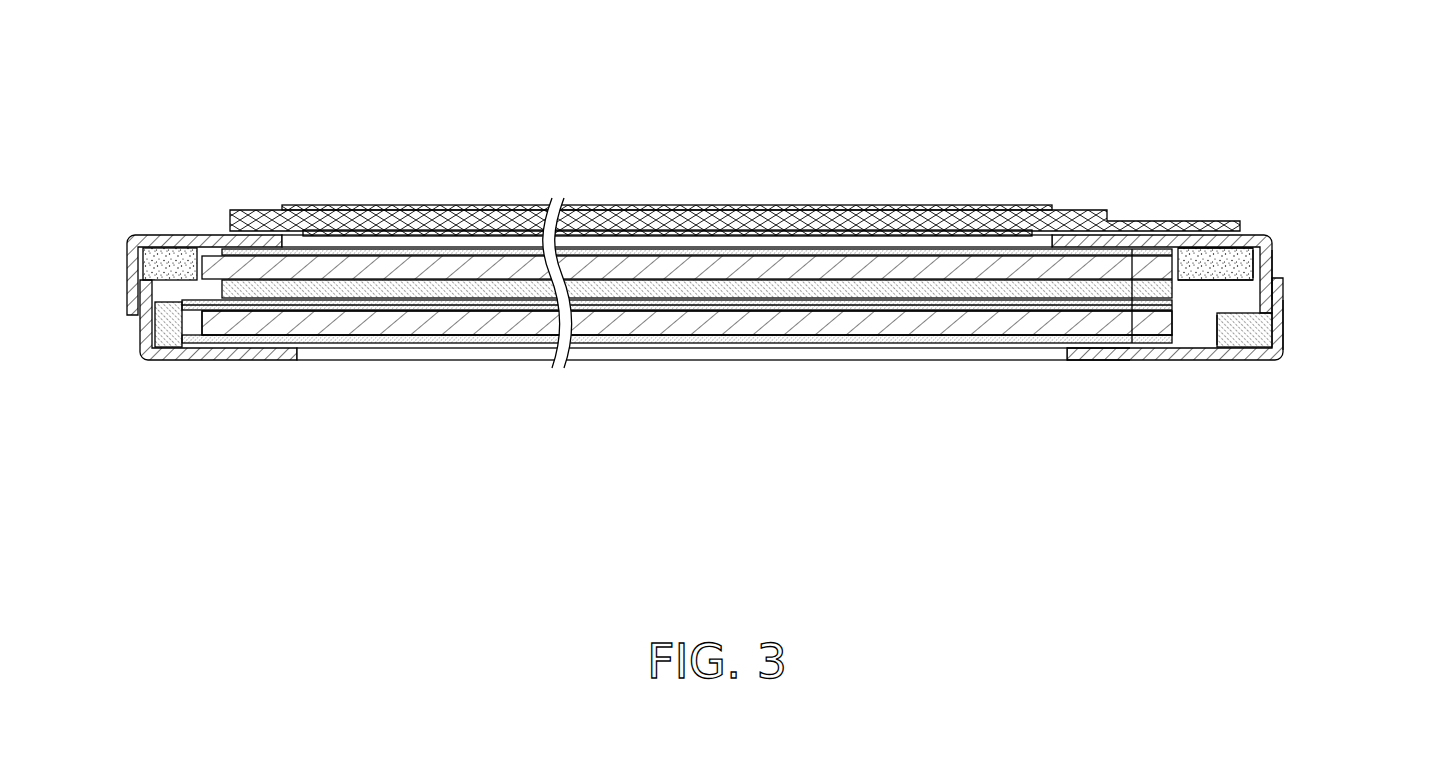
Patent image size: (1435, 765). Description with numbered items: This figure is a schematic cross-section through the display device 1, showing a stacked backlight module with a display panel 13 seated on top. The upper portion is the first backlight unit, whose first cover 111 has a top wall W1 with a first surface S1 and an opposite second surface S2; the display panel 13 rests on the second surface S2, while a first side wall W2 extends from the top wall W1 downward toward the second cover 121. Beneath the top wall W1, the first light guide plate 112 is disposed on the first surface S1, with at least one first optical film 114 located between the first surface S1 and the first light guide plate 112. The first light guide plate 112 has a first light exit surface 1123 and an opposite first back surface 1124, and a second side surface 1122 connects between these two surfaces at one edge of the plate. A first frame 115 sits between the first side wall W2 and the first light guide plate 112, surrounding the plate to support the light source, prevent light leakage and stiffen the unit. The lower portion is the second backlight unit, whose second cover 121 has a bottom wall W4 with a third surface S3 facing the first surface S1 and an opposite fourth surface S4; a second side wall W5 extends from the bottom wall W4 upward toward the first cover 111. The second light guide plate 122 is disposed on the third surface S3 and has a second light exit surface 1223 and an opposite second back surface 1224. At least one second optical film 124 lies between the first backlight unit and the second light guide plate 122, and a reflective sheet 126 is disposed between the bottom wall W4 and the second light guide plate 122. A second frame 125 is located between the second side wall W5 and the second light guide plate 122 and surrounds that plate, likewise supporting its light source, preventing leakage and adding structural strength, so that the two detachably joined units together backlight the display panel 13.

The display device 1 is at (747, 253).
The first cover 111 is at (1278, 124).
The first light guide plate 112 is at (687, 204).
The second side surface 1122 is at (197, 325).
The first light exit surface 1123 is at (433, 264).
The first back surface 1124 is at (387, 280).
The first optical film 114 is at (712, 245).
The first frame 115 is at (172, 262).
The display panel 13 is at (482, 211).
The second cover 121 is at (1125, 438).
The second light guide plate 122 is at (677, 351).
The second light exit surface 1223 is at (310, 313).
The second back surface 1224 is at (385, 331).
The second optical film 124 is at (690, 318).
The second frame 125 is at (165, 334).
The reflective sheet 126 is at (633, 349).
The top wall W1 is at (1123, 222).
The first side wall W2 is at (1274, 264).
The bottom wall W4 is at (1183, 352).
The second side wall W5 is at (1285, 324).
The first surface S1 is at (1199, 245).
The second surface S2 is at (1247, 256).
The third surface S3 is at (1100, 357).
The fourth surface S4 is at (1111, 346).